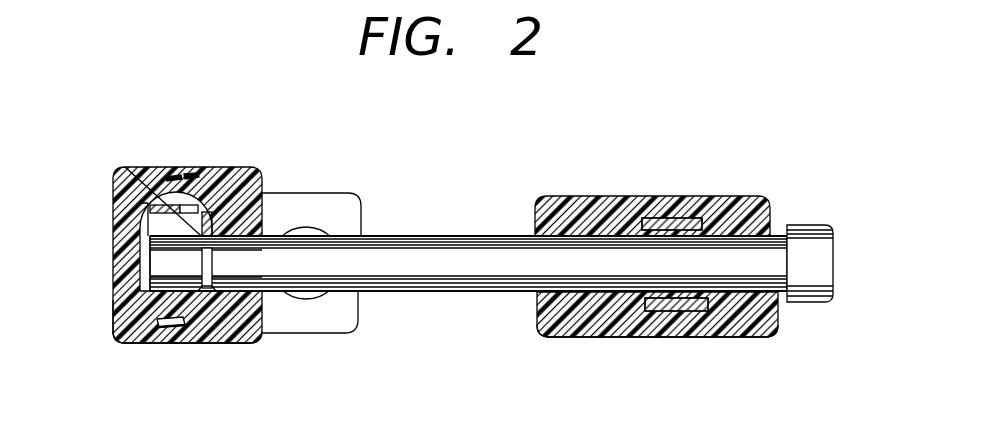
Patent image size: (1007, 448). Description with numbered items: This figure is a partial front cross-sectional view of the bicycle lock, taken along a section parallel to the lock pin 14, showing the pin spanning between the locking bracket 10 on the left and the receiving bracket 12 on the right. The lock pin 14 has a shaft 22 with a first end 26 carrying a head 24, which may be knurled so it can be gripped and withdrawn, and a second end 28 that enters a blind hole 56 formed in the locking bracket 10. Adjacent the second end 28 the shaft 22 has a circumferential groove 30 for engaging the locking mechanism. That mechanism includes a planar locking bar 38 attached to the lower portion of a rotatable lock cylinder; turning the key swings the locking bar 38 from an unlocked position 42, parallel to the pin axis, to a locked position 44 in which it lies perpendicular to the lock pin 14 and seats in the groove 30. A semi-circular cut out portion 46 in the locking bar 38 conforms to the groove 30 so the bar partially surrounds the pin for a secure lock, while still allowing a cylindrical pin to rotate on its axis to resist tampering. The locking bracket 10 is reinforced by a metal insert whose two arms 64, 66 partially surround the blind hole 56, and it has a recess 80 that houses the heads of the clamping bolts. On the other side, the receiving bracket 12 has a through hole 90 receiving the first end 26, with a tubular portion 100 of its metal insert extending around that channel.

The locking bracket 10 is at (233, 327).
The receiving bracket 12 is at (610, 320).
The lock pin 14 is at (425, 270).
The shaft 22 is at (405, 236).
The head 24 is at (820, 260).
The first end 26 is at (737, 258).
The second end 28 is at (163, 263).
The circumferential groove 30 is at (223, 345).
The locking bar 38 is at (157, 205).
The unlocked position 42 is at (183, 205).
The locked position 44 is at (143, 222).
The semi-circular cut out portion 46 is at (206, 212).
The blind hole 56 is at (255, 180).
The arm 64 is at (172, 330).
The arm 66 is at (176, 178).
The recess 80 is at (317, 300).
The through hole 90 is at (730, 305).
The tubular portion 100 is at (670, 222).